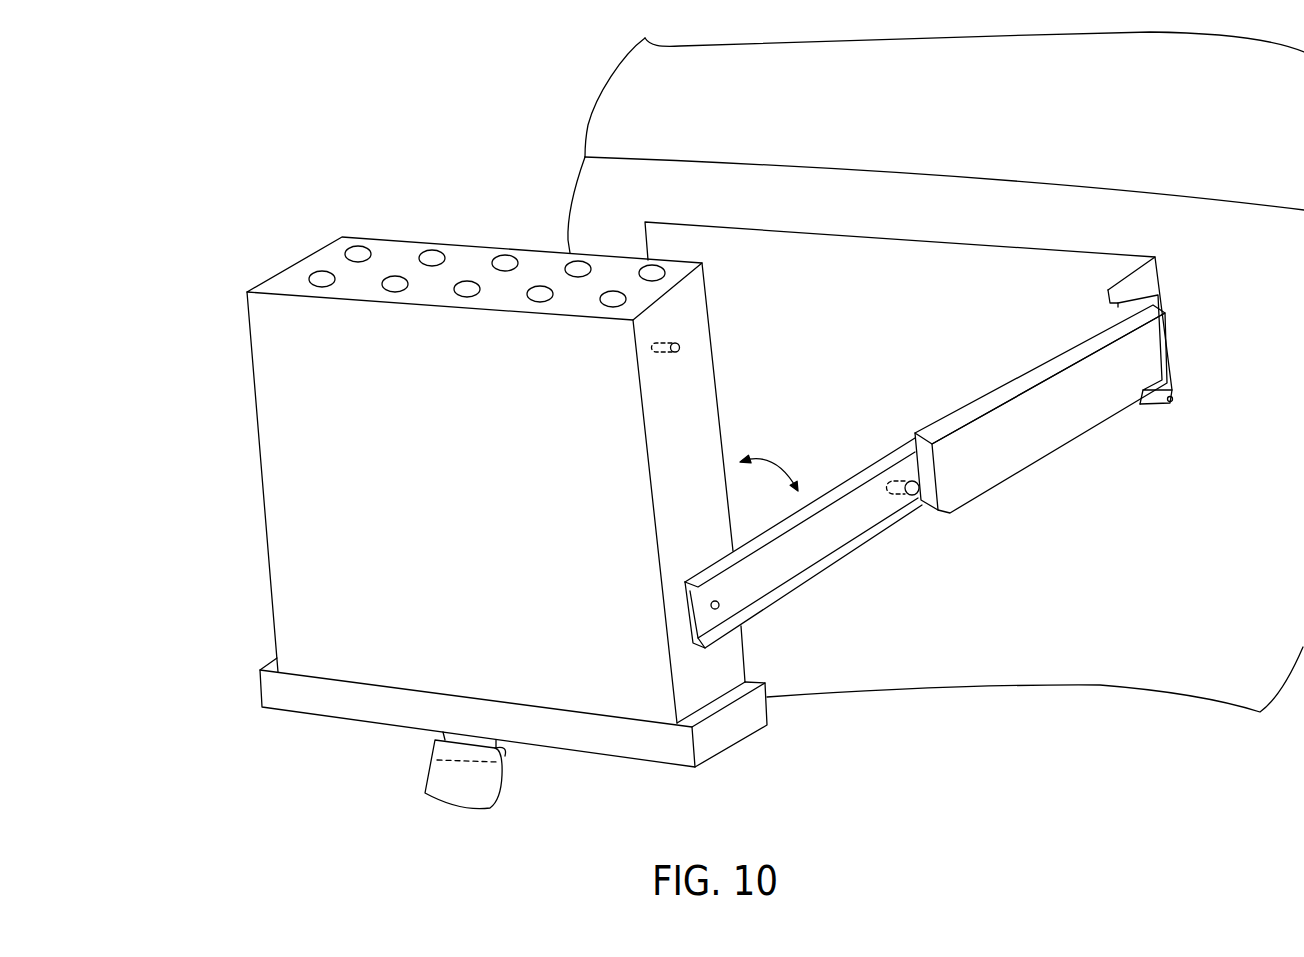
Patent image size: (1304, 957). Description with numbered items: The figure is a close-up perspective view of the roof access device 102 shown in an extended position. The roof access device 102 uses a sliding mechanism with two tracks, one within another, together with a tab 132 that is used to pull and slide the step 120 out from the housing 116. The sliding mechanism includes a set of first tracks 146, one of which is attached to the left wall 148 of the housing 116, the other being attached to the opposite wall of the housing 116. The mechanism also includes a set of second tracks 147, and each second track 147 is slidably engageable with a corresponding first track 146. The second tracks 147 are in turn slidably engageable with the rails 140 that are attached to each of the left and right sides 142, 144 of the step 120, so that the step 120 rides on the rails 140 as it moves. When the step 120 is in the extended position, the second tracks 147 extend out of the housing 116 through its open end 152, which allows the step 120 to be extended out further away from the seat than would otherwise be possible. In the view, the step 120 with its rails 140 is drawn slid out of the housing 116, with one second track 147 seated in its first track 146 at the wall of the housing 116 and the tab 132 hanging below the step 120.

The roof access device 102 is at (165, 412).
The housing 116 is at (1020, 243).
The step 120 is at (285, 570).
The tab 132 is at (500, 802).
The rail 140 is at (830, 572).
The left side 142 is at (732, 648).
The right side 144 is at (262, 490).
The first track 146 is at (1142, 290).
The second track 147 is at (1033, 463).
The left wall 148 is at (1177, 403).
The open end 152 is at (1143, 407).